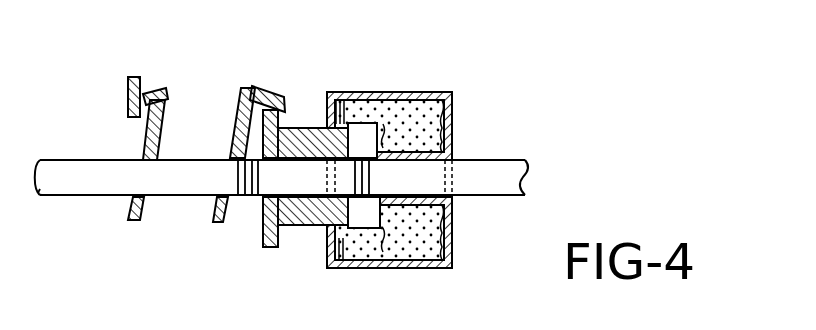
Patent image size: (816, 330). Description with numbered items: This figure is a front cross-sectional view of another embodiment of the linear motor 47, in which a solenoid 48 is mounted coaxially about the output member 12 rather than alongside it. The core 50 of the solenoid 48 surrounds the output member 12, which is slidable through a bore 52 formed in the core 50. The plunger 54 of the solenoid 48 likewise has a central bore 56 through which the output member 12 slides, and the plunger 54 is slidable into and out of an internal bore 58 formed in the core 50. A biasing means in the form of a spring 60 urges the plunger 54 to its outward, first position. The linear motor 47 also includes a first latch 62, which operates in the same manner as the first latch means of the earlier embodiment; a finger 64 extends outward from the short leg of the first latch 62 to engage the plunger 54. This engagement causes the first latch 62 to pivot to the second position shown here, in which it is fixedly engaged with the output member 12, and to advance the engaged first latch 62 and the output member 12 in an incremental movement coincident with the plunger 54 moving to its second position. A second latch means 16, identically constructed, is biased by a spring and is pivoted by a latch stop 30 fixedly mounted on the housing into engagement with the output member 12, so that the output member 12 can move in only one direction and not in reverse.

The output member 12 is at (522, 164).
The second latch means 16 is at (172, 58).
The latch stop 30 is at (128, 86).
The linear motor 47 is at (316, 52).
The solenoid 48 is at (516, 105).
The core 50 is at (388, 91).
The bore 52 is at (418, 195).
The plunger 54 is at (312, 220).
The central bore 56 is at (286, 185).
The internal bore 58 is at (362, 133).
The spring 60 is at (352, 198).
The first latch 62 is at (247, 90).
The finger 64 is at (278, 110).